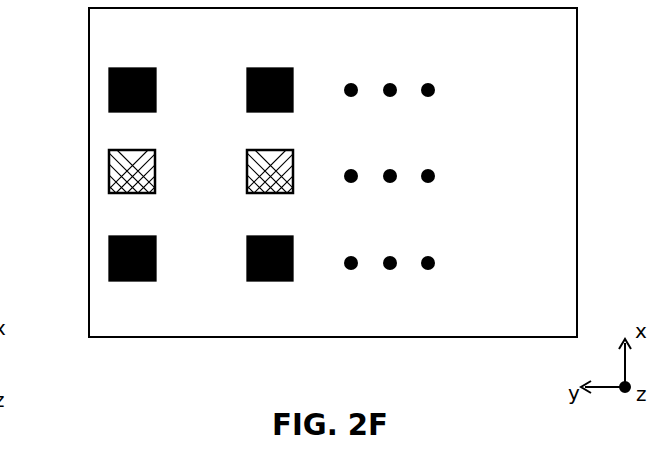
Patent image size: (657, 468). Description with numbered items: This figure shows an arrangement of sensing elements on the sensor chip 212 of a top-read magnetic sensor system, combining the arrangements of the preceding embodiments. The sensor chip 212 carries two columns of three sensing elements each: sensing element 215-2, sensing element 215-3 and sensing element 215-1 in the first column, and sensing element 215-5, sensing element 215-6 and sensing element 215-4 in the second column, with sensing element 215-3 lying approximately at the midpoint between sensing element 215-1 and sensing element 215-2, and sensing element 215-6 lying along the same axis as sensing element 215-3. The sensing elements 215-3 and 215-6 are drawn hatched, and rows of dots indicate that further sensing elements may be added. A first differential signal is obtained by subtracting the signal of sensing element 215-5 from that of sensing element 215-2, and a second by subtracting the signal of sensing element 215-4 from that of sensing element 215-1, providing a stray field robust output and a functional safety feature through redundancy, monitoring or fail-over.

The sensor chip 212 is at (394, 48).
The sensing element 215-1 is at (134, 281).
The sensing element 215-2 is at (134, 68).
The sensing element 215-3 is at (110, 175).
The sensing element 215-4 is at (272, 281).
The sensing element 215-5 is at (272, 68).
The sensing element 215-6 is at (247, 168).